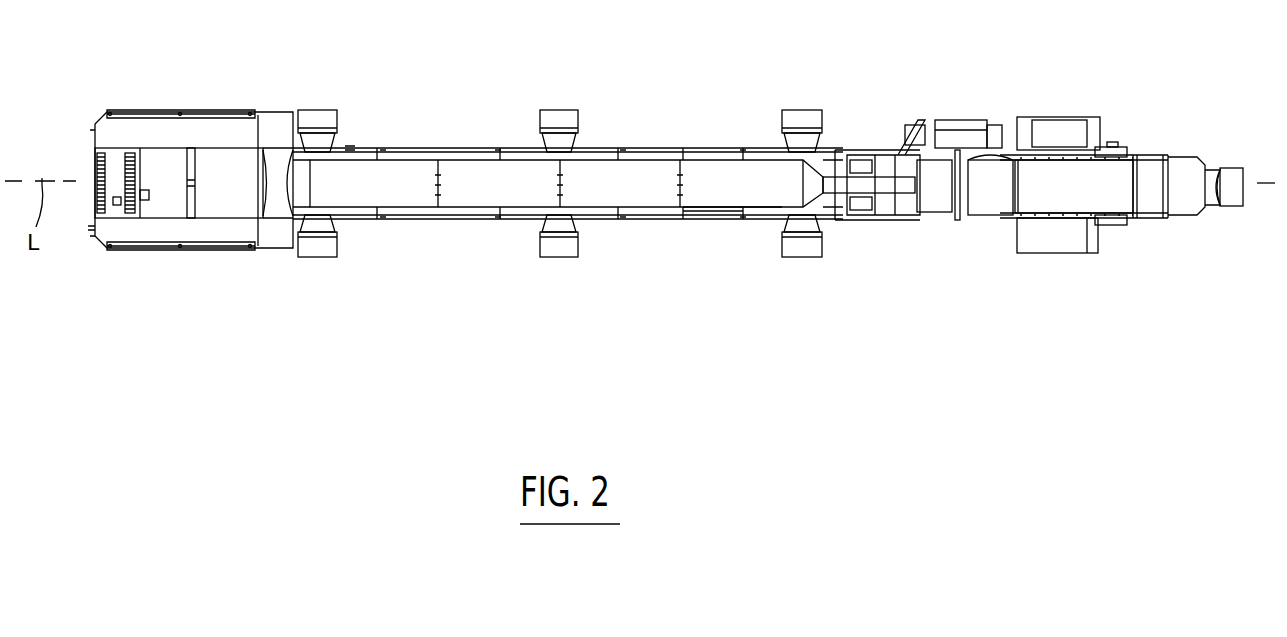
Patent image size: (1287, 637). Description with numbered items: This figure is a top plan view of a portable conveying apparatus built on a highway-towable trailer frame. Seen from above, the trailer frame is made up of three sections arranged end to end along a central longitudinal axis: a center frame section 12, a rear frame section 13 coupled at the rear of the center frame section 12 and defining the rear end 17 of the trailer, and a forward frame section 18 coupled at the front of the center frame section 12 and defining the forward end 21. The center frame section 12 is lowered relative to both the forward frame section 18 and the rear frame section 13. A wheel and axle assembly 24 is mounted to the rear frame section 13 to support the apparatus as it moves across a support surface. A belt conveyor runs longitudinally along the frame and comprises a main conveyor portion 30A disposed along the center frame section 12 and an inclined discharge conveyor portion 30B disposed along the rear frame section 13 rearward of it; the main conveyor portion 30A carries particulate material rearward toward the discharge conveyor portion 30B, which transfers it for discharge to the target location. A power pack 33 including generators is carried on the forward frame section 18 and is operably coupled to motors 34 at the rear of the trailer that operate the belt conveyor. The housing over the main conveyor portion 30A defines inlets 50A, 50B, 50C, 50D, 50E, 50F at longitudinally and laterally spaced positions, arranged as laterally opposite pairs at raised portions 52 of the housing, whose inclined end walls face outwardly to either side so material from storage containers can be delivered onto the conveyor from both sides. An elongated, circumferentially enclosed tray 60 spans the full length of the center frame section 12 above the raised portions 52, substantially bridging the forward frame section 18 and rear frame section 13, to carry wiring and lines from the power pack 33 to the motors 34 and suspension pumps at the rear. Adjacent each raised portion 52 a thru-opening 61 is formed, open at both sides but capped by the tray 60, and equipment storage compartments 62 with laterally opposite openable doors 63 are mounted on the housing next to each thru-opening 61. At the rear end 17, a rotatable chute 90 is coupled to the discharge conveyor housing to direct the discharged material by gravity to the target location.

The center frame section 12 is at (450, 221).
The rear frame section 13 is at (980, 224).
The rear end 17 is at (1100, 237).
The forward frame section 18 is at (202, 110).
The forward end 21 is at (92, 120).
The wheel and axle assembly 24 is at (1057, 258).
The main conveyor portion 30A is at (522, 151).
The inclined discharge conveyor portion 30B is at (1124, 176).
The power pack 33 is at (156, 157).
The motors 34 is at (958, 116).
The inlet 50A is at (315, 241).
The inlet 50B is at (316, 127).
The inlet 50C is at (558, 241).
The inlet 50D is at (559, 126).
The inlet 50E is at (803, 241).
The inlet 50F is at (804, 127).
The raised portions 52 is at (362, 148).
The tray 60 is at (712, 158).
The thru-opening 61 is at (764, 222).
The equipment storage compartments 62 is at (724, 222).
The openable doors 63 is at (690, 220).
The rotatable chute 90 is at (1217, 208).